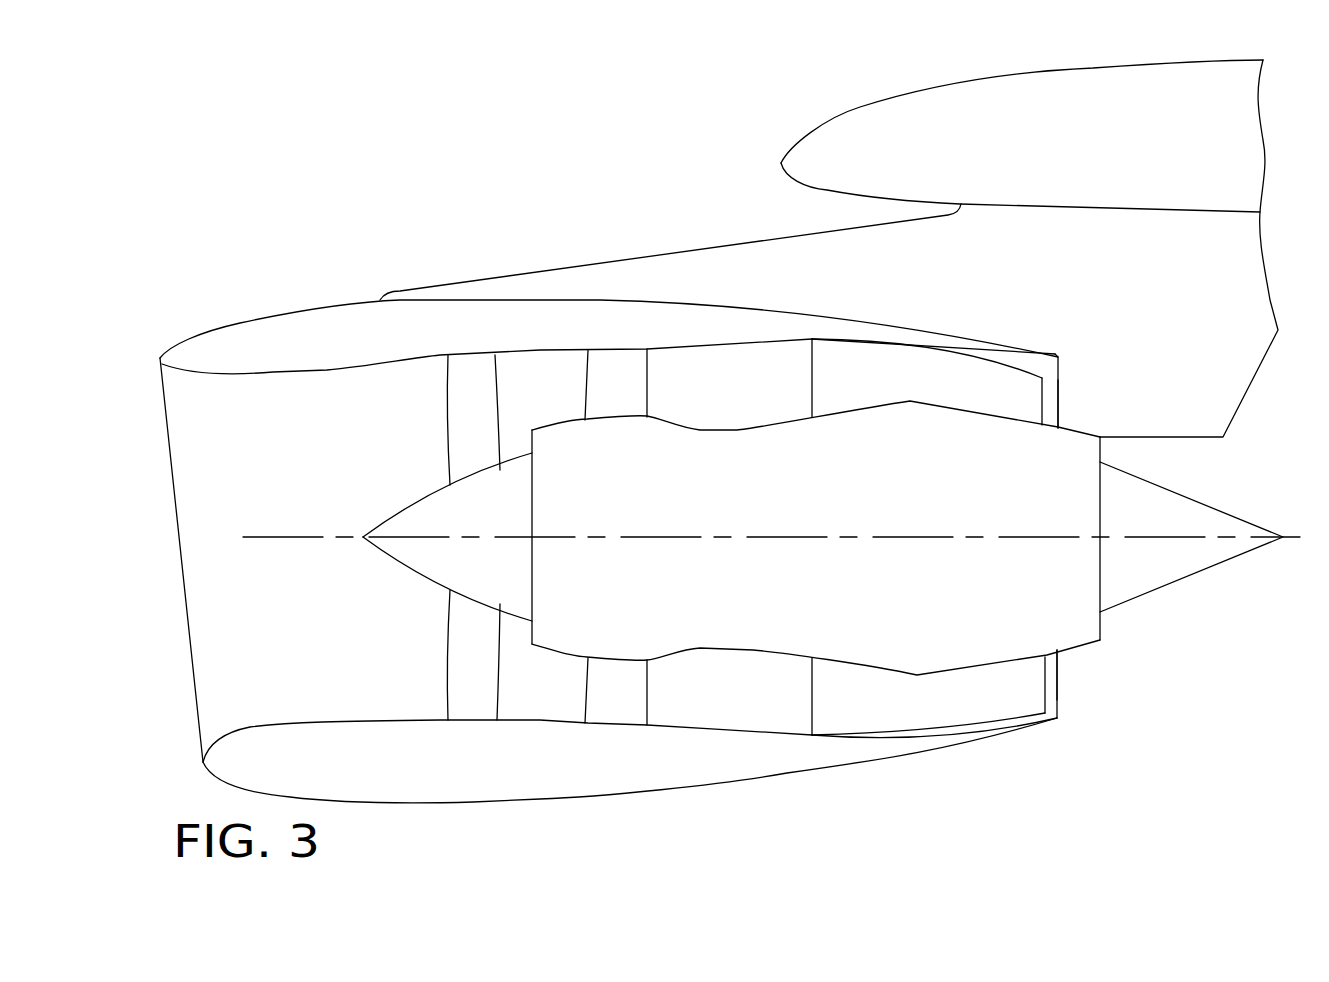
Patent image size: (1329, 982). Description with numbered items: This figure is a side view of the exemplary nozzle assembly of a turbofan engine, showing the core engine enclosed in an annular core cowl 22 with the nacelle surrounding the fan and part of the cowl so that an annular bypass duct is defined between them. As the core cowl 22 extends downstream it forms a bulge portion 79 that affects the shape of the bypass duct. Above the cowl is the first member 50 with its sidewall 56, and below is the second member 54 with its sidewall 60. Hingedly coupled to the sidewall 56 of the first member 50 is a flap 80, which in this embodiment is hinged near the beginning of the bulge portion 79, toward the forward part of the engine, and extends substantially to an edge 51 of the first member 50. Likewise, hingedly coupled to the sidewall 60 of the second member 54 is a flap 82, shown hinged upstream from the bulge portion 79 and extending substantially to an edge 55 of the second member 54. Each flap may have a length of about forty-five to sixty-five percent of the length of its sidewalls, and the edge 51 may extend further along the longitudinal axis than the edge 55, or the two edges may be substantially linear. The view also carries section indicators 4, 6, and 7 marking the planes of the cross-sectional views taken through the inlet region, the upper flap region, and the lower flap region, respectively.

The core cowl 22 is at (858, 514).
The first member 50 is at (1048, 368).
The edge of first member 51 is at (1059, 395).
The second member 54 is at (1052, 705).
The edge of second member 55 is at (1060, 675).
The sidewall of first member 56 is at (713, 391).
The sidewall of second member 60 is at (715, 697).
The bulge portion 79 is at (928, 398).
The flap 80 is at (853, 350).
The flap 82 is at (850, 720).
The section line 4- 4 is at (159, 525).
The section line 6- 6 is at (549, 392).
The section line 7- 7 is at (603, 693).